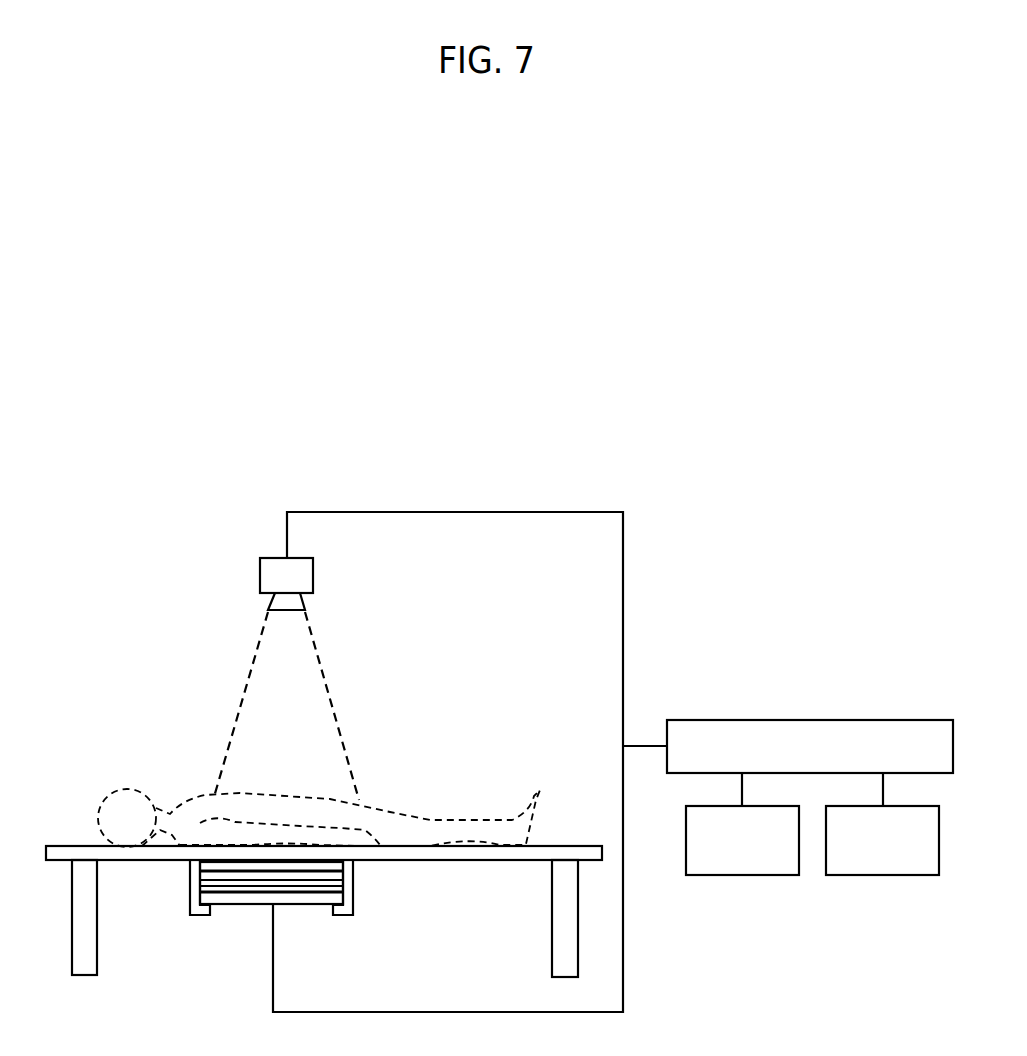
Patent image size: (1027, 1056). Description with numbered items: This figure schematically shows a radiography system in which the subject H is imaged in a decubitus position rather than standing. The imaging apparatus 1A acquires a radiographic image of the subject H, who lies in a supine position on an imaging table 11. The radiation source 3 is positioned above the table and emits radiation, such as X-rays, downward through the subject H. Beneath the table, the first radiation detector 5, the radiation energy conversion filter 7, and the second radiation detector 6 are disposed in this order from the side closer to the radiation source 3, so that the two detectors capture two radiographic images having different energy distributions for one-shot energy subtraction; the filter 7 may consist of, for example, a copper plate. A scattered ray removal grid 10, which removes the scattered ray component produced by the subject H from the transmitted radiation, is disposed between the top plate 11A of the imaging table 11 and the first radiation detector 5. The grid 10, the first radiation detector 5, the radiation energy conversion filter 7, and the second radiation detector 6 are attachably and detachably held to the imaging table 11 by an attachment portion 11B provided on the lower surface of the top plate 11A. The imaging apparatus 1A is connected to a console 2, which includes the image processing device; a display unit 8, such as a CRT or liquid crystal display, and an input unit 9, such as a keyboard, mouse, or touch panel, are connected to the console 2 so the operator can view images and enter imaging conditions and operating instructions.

The imaging apparatus 1A is at (176, 592).
The console 2 is at (931, 719).
The radiation source 3 is at (313, 575).
The first radiation detector 5 is at (343, 877).
The second radiation detector 6 is at (321, 898).
The radiation energy conversion filter 7 is at (343, 888).
The display unit 8 is at (767, 877).
The input unit 9 is at (908, 877).
The scattered ray removal grid 10 is at (220, 863).
The imaging table 11 is at (97, 943).
The top plate 11A is at (50, 846).
The attachment portion 11B is at (353, 865).
The subject H is at (112, 790).